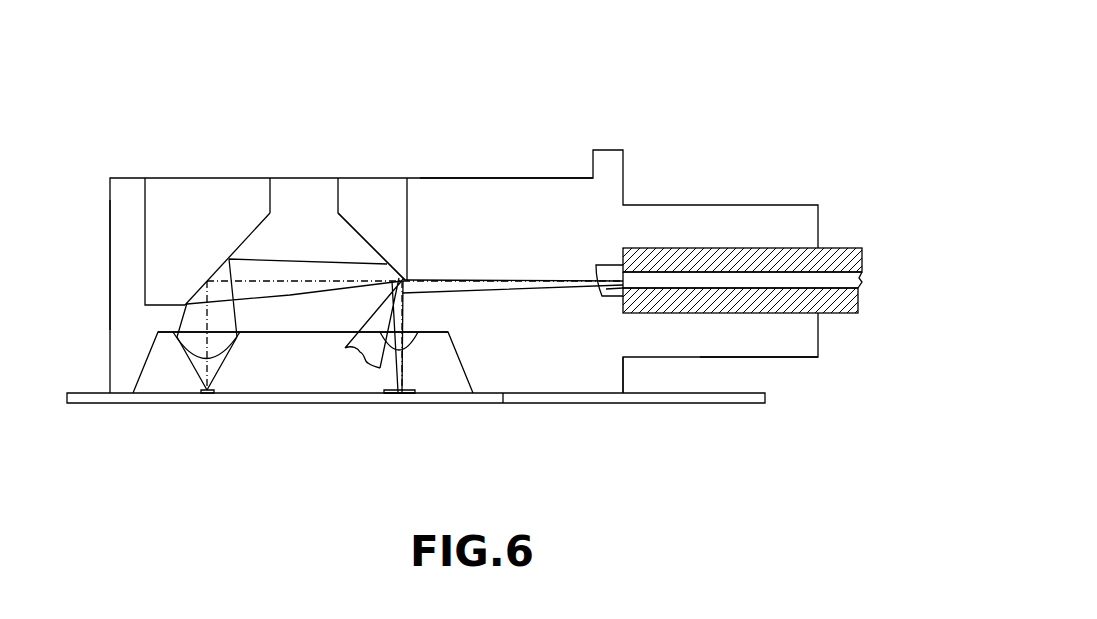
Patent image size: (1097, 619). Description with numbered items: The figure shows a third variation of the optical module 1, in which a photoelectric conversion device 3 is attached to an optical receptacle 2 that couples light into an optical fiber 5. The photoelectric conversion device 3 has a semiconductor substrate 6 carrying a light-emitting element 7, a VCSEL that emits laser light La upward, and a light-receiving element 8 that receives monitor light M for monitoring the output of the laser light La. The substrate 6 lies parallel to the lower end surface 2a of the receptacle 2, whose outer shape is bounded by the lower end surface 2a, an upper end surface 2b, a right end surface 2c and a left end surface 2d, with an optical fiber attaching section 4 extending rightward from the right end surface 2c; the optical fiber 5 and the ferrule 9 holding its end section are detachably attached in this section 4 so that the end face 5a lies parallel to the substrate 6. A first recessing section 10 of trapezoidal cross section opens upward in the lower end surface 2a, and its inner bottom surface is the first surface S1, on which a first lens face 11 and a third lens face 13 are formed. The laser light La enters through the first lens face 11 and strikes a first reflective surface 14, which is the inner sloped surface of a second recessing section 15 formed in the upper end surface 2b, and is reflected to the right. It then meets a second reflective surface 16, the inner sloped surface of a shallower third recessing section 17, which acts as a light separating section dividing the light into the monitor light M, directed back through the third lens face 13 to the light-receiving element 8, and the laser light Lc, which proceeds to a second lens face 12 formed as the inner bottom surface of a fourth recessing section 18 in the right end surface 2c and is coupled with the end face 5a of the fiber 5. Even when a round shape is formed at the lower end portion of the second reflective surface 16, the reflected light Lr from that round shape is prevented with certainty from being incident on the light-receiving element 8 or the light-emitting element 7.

The optical module 1 is at (148, 105).
The optical receptacle 2 is at (300, 178).
The lower end surface 2a is at (503, 403).
The upper end surface 2b is at (467, 178).
The right end surface 2c is at (627, 370).
The left end surface 2d is at (110, 243).
The photoelectric conversion device 3 is at (428, 403).
The optical fiber attaching section 4 is at (767, 357).
The optical fiber 5 is at (695, 272).
The end face 5a is at (623, 276).
The semiconductor substrate 6 is at (338, 403).
The light-emitting element 7 is at (212, 388).
The light-receiving element 8 is at (411, 394).
The ferrule 9 is at (730, 248).
The first recessing section 10 is at (277, 372).
The first lens face 11 is at (188, 352).
The second lens face 12 is at (600, 297).
The third lens face 13 is at (416, 342).
The first reflective surface 14 is at (213, 275).
The second recessing section 15 is at (207, 202).
The second reflective surface 16 is at (385, 262).
The third recessing section 17 is at (360, 197).
The fourth recessing section 18 is at (608, 289).
The laser light La is at (307, 263).
The laser light to be coupled Lc is at (478, 280).
The reflected light Lr is at (373, 323).
The first surface S1 is at (303, 356).
The monitor light M is at (395, 368).